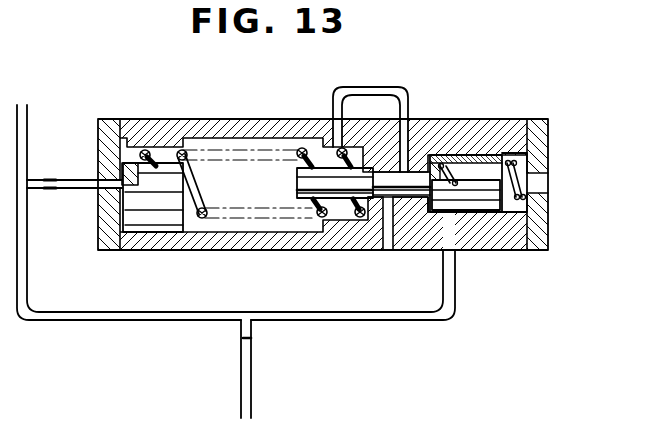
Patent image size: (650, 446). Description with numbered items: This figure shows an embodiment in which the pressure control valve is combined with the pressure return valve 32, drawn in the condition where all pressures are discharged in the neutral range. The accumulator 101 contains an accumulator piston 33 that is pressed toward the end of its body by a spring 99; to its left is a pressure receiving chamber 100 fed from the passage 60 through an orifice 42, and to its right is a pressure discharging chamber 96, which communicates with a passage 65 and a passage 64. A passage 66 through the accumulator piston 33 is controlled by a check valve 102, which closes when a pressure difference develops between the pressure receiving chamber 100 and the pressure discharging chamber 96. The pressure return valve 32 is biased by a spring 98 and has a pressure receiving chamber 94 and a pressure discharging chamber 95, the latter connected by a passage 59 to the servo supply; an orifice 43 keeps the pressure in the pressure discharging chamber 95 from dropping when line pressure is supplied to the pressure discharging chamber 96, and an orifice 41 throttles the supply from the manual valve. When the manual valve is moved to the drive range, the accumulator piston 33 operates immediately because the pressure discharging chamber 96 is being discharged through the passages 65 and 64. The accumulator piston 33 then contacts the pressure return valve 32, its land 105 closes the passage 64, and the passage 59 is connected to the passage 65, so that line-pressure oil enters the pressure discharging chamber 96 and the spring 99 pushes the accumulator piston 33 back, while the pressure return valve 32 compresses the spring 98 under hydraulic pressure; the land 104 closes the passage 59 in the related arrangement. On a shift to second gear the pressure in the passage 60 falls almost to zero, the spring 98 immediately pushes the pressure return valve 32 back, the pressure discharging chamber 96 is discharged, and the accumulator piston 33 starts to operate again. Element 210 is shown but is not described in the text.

The pressure return valve 32 is at (413, 177).
The accumulator piston 33 is at (171, 140).
The orifice 41 is at (249, 338).
The orifice 42 is at (72, 178).
The orifice 43 is at (370, 90).
The passage 59 is at (340, 322).
The passage 60 is at (121, 316).
The passage 64 is at (392, 252).
The passage 65 is at (395, 92).
The passage 66 is at (130, 150).
The pressure receiving chamber 94 is at (512, 160).
The pressure discharging chamber 95 is at (412, 208).
The pressure discharging chamber 96 is at (246, 137).
The spring 98 is at (508, 200).
The spring 99 is at (300, 160).
The pressure receiving chamber 100 is at (122, 228).
The accumulator 101 is at (305, 130).
The check valve 102 is at (119, 170).
The land 104 is at (467, 211).
The land 105 is at (338, 200).
The vent opening 210 is at (548, 186).